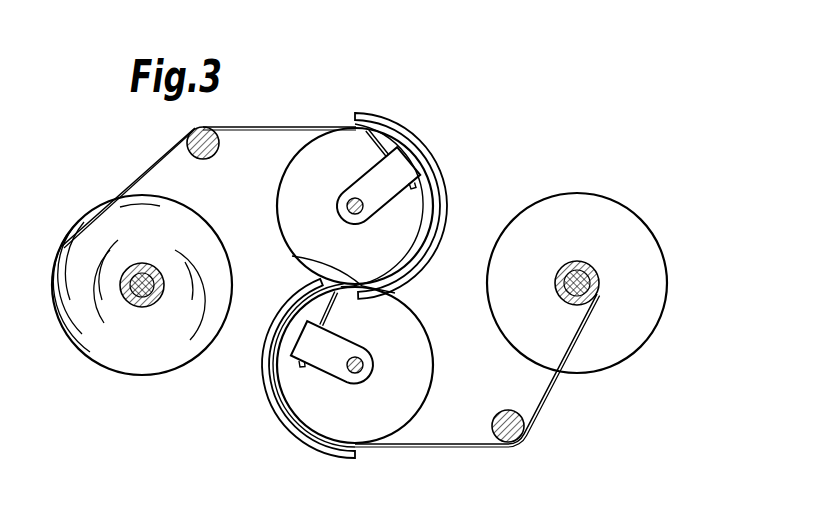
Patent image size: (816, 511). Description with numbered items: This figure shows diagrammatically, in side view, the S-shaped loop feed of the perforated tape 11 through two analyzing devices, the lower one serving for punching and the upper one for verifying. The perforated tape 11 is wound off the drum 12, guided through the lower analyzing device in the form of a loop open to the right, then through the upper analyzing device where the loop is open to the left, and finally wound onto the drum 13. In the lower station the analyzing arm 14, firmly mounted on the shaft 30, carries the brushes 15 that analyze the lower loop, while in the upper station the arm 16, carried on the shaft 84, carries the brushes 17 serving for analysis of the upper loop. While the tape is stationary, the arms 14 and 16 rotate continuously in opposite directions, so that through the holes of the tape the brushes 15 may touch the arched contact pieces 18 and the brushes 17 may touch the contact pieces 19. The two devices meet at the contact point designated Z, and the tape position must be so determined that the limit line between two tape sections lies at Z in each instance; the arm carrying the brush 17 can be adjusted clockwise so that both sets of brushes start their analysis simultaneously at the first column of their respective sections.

The perforated tape 11 is at (553, 374).
The drum 12 is at (606, 235).
The drum 13 is at (155, 338).
The analyzing arm 14 is at (330, 338).
The brushes 15 is at (323, 309).
The arm 16 is at (408, 177).
The brushes 17 is at (383, 143).
The contact pieces 18 is at (270, 379).
The contact pieces 19 is at (430, 158).
The shaft 30 is at (350, 372).
The shaft 84 is at (345, 203).
The contact point Z is at (296, 256).